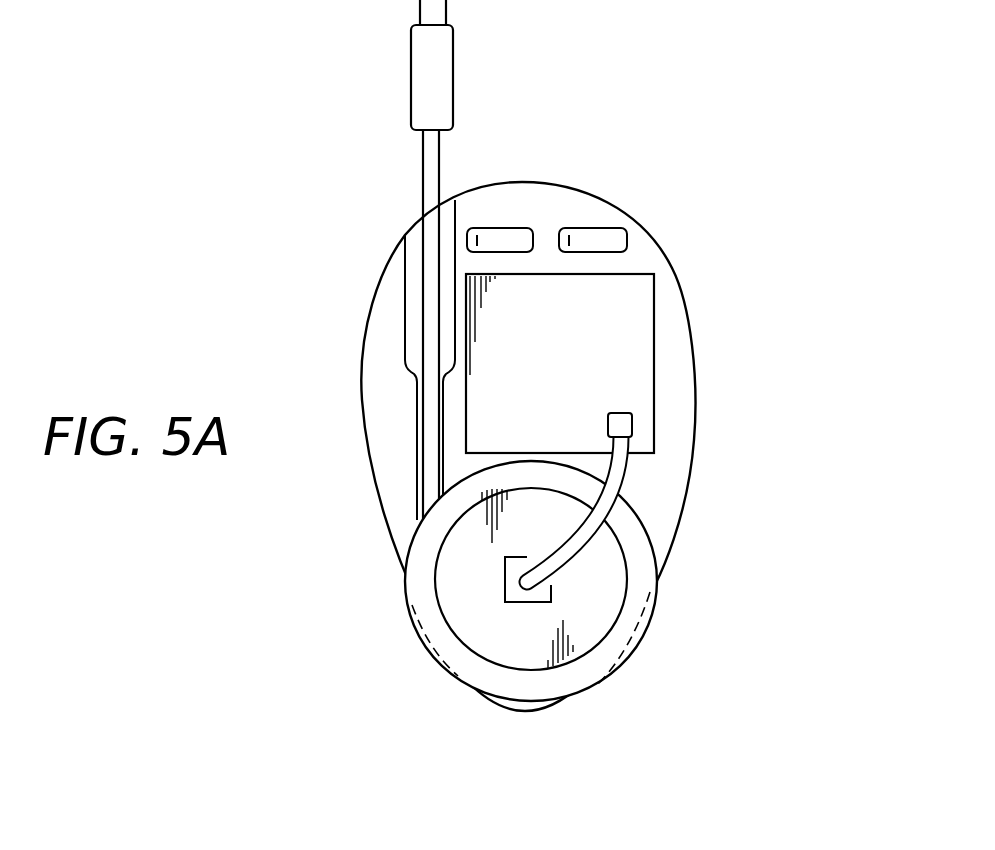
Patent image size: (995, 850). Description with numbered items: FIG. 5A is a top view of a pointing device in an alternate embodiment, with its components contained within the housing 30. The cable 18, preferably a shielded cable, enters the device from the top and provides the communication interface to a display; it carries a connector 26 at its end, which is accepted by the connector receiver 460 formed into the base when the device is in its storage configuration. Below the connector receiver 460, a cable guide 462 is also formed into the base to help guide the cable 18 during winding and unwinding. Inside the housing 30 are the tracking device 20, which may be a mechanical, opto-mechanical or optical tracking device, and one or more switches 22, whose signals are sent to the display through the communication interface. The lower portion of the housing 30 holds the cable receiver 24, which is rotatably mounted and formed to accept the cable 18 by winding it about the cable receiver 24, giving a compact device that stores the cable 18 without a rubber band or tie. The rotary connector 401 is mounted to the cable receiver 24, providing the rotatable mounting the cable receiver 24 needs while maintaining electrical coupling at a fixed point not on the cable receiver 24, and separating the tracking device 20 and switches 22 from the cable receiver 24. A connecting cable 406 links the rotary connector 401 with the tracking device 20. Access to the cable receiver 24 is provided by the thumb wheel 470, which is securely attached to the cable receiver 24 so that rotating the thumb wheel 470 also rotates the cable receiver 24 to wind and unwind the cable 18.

The cable 18 is at (442, 173).
The tracking device 20 is at (638, 347).
The switches 22 is at (517, 227).
The cable receiver 24 is at (596, 569).
The connector 26 is at (453, 58).
The housing 30 is at (367, 290).
The rotary connector 401 is at (552, 595).
The connecting cable 406 is at (630, 482).
The connector receiver 460 is at (405, 273).
The cable guide 462 is at (418, 450).
The thumb wheel 470 is at (415, 645).